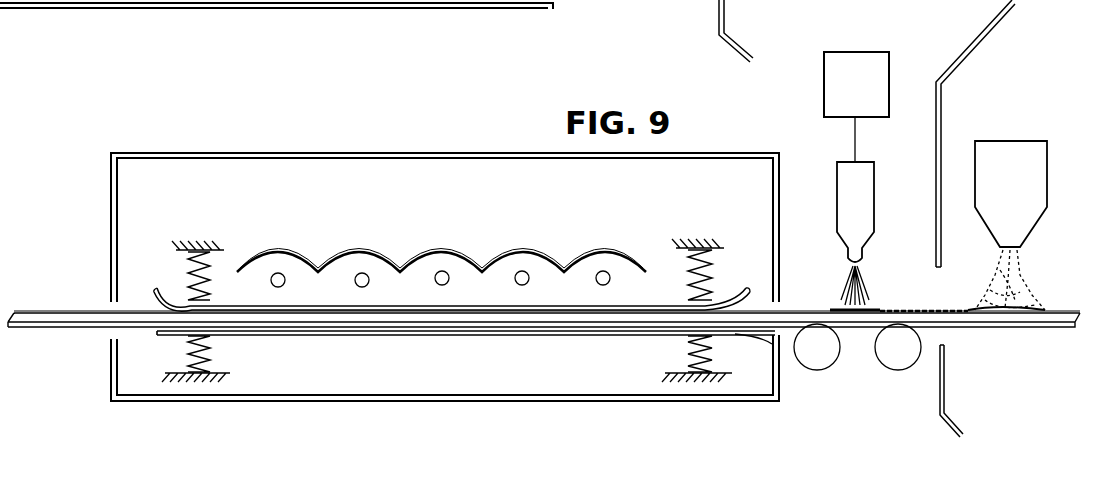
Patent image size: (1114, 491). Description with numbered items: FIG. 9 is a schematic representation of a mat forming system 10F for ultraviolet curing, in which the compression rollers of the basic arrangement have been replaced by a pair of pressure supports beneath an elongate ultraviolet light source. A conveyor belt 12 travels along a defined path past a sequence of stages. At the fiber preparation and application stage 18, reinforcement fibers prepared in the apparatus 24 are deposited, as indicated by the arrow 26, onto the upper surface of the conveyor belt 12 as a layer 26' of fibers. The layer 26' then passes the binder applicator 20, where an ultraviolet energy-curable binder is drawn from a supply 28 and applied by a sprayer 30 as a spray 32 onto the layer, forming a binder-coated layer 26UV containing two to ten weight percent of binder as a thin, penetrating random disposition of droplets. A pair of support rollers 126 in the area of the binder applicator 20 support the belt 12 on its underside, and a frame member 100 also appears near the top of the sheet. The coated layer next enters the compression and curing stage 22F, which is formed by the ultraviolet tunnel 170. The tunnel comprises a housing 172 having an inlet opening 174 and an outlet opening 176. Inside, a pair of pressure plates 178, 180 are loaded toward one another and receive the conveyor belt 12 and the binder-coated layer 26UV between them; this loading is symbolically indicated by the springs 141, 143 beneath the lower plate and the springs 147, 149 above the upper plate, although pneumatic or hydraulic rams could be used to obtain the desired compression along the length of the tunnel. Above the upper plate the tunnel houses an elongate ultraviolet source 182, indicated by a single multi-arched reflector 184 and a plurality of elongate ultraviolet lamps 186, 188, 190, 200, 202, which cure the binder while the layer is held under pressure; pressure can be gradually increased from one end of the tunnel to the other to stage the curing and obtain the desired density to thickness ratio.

The mat forming system 10F is at (205, 112).
The conveyor belt 12 is at (955, 323).
The fiber preparation and application stage 18 is at (968, 44).
The binder applicator 20 is at (826, 61).
The compression and curing stage 22F is at (516, 155).
The fiber preparation apparatus 24 is at (985, 162).
The fiber deposition 26 is at (1015, 280).
The layer of fibers 26' is at (927, 290).
The binder-coated layer 26UV is at (836, 311).
The binder supply 28 is at (870, 75).
The sprayer 30 is at (860, 212).
The binder spray 32 is at (866, 286).
The frame 100 is at (331, 4).
The support rollers 126 is at (827, 355).
The spring 141 is at (688, 353).
The spring 143 is at (212, 353).
The spring 147 is at (712, 272).
The spring 149 is at (210, 266).
The ultraviolet tunnel 170 is at (766, 128).
The housing 172 is at (476, 152).
The inlet opening 174 is at (775, 300).
The outlet opening 176 is at (112, 302).
The pressure plate 178 is at (440, 337).
The pressure plate 180 is at (172, 290).
The elongate ultraviolet source 182 is at (435, 254).
The multi-arched reflector 184 is at (452, 270).
The elongate ultraviolet lamp 186 is at (597, 282).
The elongate ultraviolet lamp 188 is at (516, 282).
The elongate ultraviolet lamp 190 is at (436, 281).
The elongate ultraviolet lamp 200 is at (356, 283).
The elongate ultraviolet lamp 202 is at (272, 284).